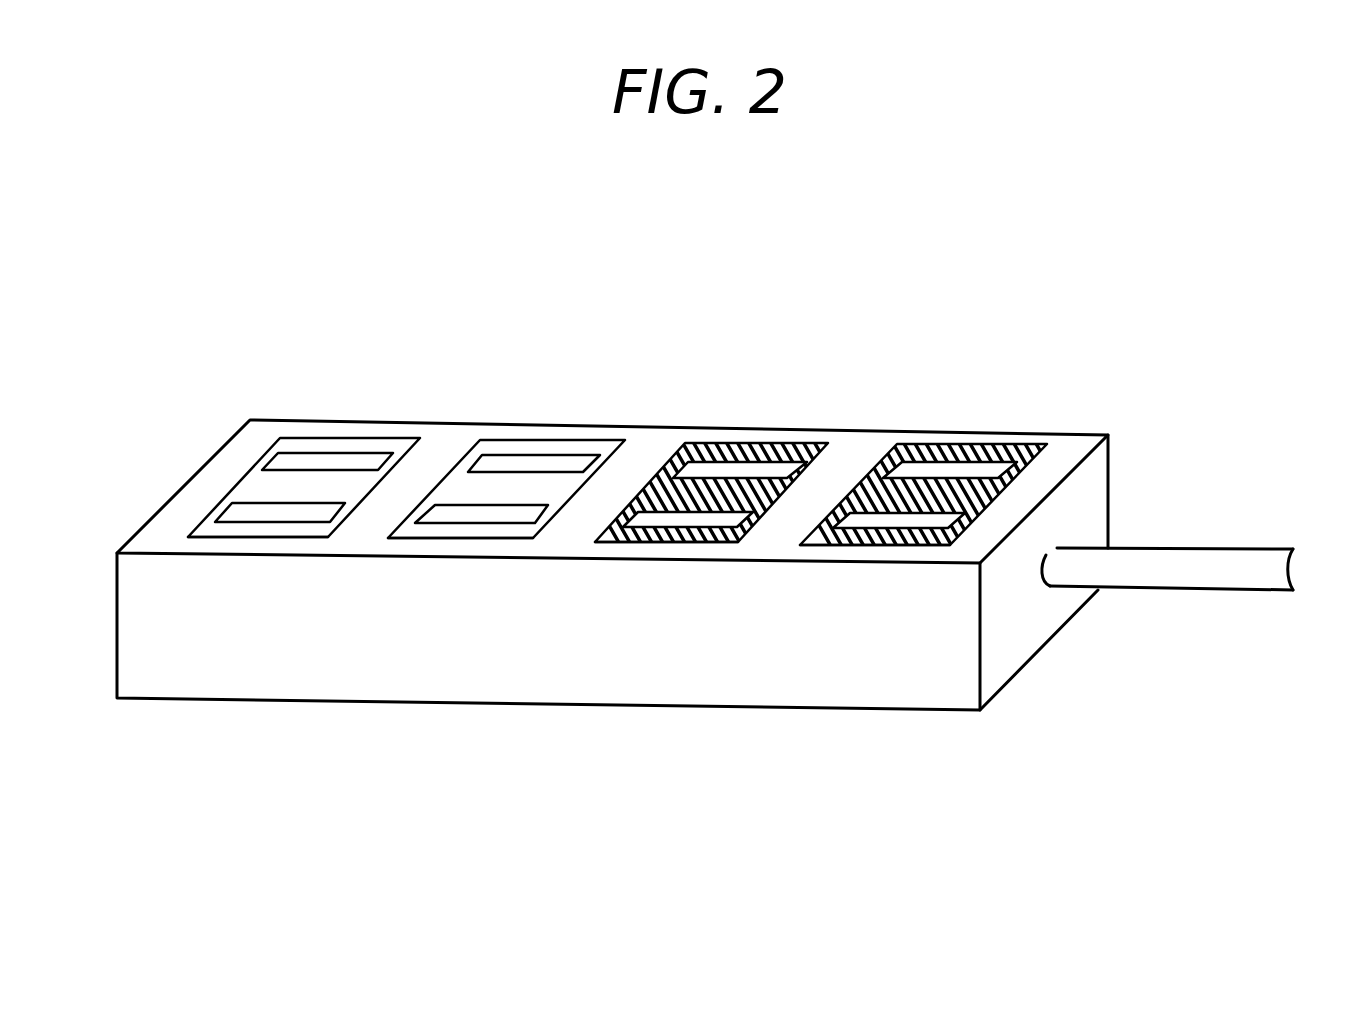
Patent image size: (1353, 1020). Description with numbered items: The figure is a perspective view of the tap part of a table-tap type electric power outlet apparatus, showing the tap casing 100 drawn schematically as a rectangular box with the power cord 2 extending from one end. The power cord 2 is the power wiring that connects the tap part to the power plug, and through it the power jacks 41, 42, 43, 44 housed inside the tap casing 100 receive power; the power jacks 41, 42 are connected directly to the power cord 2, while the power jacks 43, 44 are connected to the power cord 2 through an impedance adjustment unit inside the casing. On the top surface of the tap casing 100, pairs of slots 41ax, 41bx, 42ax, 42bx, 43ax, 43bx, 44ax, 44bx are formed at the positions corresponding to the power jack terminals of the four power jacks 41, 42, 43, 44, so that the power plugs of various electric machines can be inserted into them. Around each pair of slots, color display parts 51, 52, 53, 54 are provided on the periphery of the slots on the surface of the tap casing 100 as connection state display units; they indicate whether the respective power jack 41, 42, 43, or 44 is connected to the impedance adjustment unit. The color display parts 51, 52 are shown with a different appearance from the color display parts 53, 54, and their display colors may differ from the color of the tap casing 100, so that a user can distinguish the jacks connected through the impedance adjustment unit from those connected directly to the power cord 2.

The tap casing 100 is at (1093, 432).
The power cord 2 is at (1170, 568).
The power jack 41 is at (852, 498).
The power jack 42 is at (642, 498).
The power jack 43 is at (452, 477).
The power jack 44 is at (240, 476).
The slot 41ax is at (952, 468).
The slot 41bx is at (898, 522).
The slot 42ax is at (737, 468).
The slot 42bx is at (703, 522).
The slot 43ax is at (525, 467).
The slot 43bx is at (500, 517).
The slot 44ax is at (323, 457).
The slot 44bx is at (285, 515).
The color display part 51 is at (833, 543).
The color display part 52 is at (638, 543).
The color display part 53 is at (425, 533).
The color display part 54 is at (218, 531).